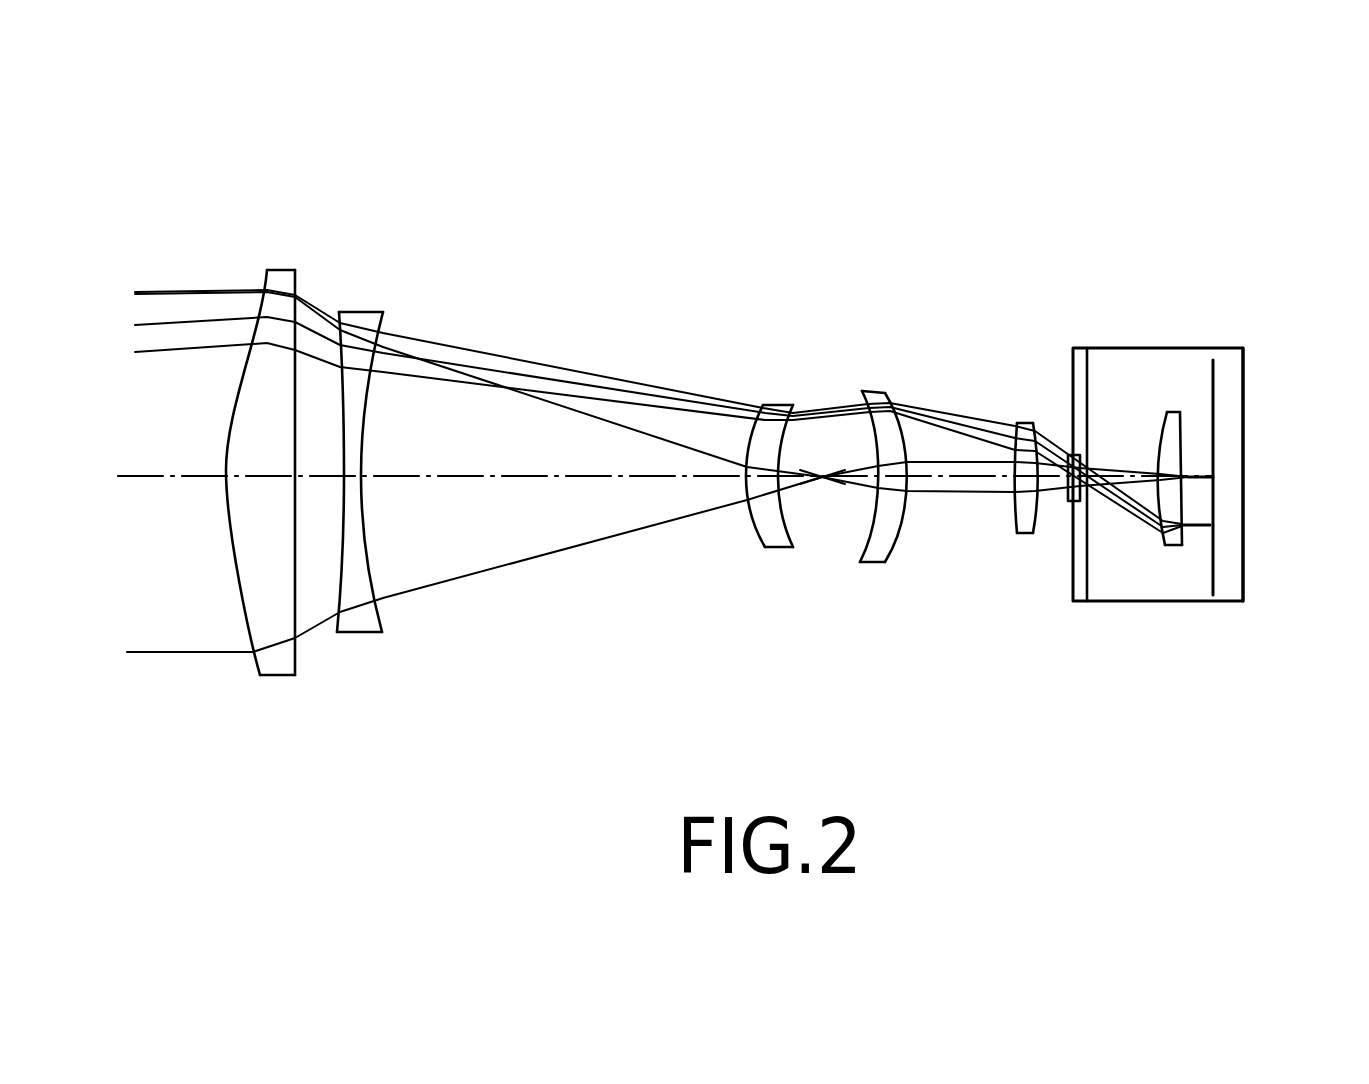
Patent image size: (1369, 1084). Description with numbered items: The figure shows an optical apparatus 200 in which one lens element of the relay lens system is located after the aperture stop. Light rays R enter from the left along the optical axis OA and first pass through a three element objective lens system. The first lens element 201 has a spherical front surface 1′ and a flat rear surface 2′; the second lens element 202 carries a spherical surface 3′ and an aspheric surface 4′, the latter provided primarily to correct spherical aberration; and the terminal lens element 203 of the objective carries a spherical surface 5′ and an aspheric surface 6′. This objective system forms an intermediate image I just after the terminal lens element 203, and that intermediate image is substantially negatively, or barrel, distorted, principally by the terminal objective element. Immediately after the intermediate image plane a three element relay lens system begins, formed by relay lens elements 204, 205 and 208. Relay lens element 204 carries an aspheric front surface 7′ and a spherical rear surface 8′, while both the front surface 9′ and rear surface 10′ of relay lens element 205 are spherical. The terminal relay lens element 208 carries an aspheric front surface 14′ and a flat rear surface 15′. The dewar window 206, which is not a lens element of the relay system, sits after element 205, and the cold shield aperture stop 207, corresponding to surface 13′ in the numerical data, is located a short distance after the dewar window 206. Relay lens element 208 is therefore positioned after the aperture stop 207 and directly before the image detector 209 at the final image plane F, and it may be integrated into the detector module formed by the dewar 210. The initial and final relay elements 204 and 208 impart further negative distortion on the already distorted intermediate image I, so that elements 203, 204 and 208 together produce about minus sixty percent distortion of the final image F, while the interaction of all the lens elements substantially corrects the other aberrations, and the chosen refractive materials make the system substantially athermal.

The optical apparatus 200 is at (576, 252).
The first lens element 201 is at (280, 265).
The second lens element 202 is at (364, 312).
The terminal lens element 203 is at (780, 405).
The relay lens element 204 is at (872, 388).
The relay lens element 205 is at (1013, 425).
The dewar window 206 is at (1063, 500).
The cold shield aperture stop 207 is at (1092, 560).
The terminal lens element of the relay lens system 208 is at (1177, 410).
The image detector 209 is at (1217, 552).
The dewar 210 is at (1245, 452).
The spherical front surface 1′ is at (226, 434).
The flat rear surface 2′ is at (296, 498).
The spherical surface 3′ is at (337, 573).
The aspheric surface 4′ is at (373, 530).
The spherical surface 5′ is at (747, 512).
The aspheric surface 6′ is at (792, 518).
The aspheric front surface 7′ is at (870, 535).
The spherical rear surface 8′ is at (903, 513).
The front surface 9′ is at (1012, 512).
The rear surface 10′ is at (1055, 447).
The aperture stop surface 13′ is at (1089, 370).
The aspheric front surface 14′ is at (1157, 447).
The flat rear surface 15′ is at (1185, 436).
The intermediate image I is at (822, 495).
The final image plane F is at (1199, 547).
The rays R is at (120, 281).
The optical axis OA is at (136, 478).